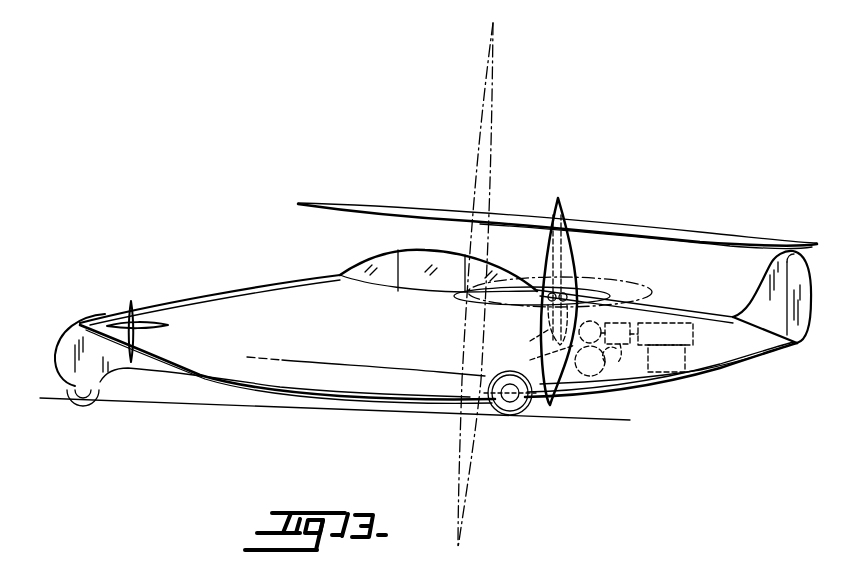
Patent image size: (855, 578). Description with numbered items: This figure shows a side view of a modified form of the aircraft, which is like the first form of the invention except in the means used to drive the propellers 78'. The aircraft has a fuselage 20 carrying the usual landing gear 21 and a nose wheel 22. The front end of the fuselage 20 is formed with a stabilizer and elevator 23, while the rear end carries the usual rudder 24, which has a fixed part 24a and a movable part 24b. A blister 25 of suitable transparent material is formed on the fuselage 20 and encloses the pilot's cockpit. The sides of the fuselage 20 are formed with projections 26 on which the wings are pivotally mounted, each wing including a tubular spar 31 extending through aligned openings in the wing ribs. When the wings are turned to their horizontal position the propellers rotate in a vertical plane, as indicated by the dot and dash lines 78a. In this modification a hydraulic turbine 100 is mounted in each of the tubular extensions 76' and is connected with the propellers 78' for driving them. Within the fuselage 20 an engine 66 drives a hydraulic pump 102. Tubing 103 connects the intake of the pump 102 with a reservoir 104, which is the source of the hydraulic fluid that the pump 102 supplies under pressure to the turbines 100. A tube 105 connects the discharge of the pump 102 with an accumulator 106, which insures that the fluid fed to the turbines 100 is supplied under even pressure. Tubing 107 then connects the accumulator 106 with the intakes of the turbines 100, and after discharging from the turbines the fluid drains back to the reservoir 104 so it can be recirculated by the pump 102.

The fuselage 20 is at (333, 370).
The landing gear 21 is at (511, 412).
The nose wheel 22 is at (83, 402).
The stabilizer and elevator 23 is at (134, 302).
The rudder 24 is at (771, 250).
The fixed part of rudder 24a is at (764, 282).
The movable part of rudder 24b is at (801, 325).
The blister 25 is at (365, 268).
The projections 26 is at (600, 322).
The tubular spar 31 is at (515, 307).
The engine 66 is at (664, 330).
The tubular extensions 76' is at (546, 292).
The propellers 78' is at (557, 218).
The dot and dash lines 78a is at (482, 128).
The hydraulic turbine 100 is at (560, 243).
The hydraulic pump 102 is at (666, 358).
The tubing 103 is at (603, 316).
The reservoir 104 is at (536, 358).
The tube 105 is at (614, 358).
The accumulator 106 is at (592, 368).
The tubing 107 is at (522, 343).